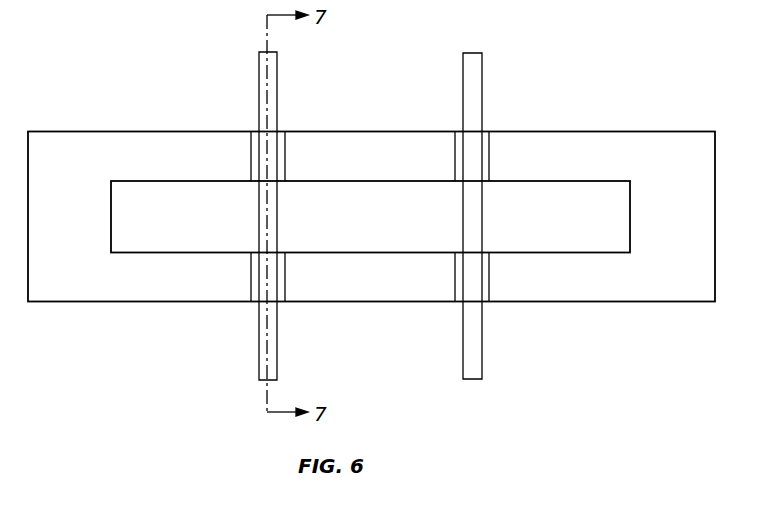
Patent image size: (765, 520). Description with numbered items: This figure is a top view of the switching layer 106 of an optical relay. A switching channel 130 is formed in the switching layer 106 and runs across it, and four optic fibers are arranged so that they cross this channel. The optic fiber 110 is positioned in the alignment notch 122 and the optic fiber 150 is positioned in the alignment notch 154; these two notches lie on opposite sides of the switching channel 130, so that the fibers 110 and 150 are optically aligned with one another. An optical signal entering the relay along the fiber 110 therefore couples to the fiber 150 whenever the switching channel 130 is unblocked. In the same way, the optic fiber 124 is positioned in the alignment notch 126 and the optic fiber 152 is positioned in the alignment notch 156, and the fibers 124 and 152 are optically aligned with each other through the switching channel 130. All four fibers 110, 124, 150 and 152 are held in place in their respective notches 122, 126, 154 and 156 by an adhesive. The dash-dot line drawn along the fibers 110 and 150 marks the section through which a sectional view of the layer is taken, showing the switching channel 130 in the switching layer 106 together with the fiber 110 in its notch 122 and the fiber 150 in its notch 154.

The switching layer 106 is at (109, 131).
The switching channel 130 is at (322, 198).
The alignment notch 154 is at (253, 133).
The alignment notch 122 is at (254, 300).
The optic fiber 150 is at (278, 90).
The optic fiber 110 is at (278, 340).
The alignment notch 156 is at (458, 137).
The alignment notch 126 is at (458, 300).
The optic fiber 152 is at (483, 92).
The optic fiber 124 is at (483, 340).